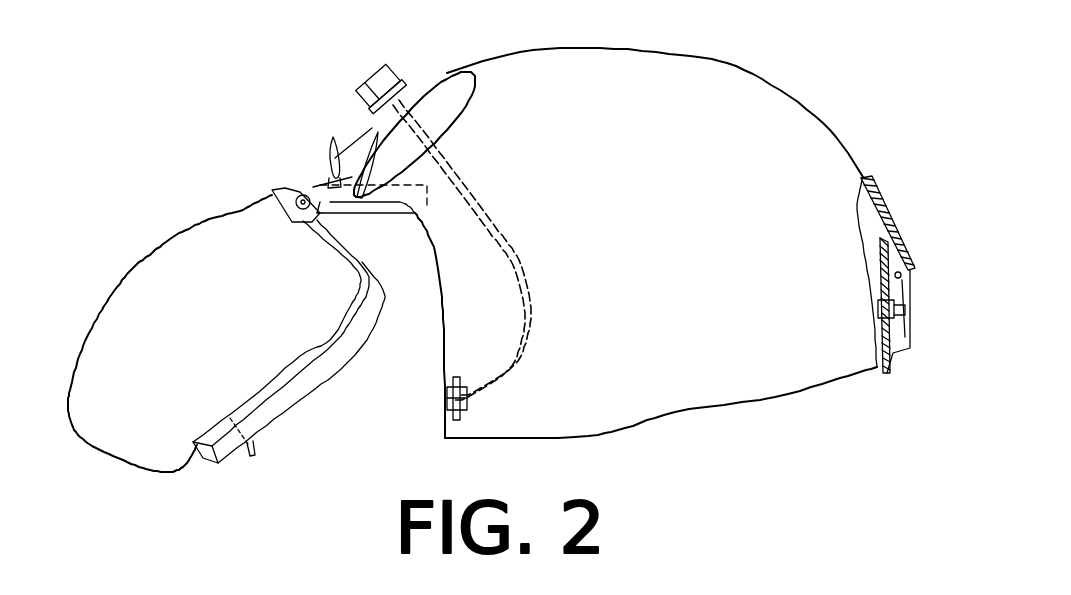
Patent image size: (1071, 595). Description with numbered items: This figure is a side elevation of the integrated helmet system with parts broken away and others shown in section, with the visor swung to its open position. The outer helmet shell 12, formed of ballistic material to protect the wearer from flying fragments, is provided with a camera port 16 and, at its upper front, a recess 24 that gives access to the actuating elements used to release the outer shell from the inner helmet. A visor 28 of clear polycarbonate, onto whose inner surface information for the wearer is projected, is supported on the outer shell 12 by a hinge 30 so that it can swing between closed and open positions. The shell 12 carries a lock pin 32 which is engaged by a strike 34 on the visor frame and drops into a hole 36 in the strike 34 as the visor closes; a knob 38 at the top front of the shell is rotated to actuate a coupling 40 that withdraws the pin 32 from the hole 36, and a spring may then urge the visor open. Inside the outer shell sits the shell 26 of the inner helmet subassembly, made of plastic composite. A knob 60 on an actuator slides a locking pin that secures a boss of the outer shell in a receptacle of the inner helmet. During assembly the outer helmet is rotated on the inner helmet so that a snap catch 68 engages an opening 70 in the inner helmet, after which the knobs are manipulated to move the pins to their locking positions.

The outer helmet shell 12 is at (718, 87).
The camera port 16 is at (443, 91).
The recess 24 is at (363, 130).
The shell of the inner helmet subassembly 26 is at (893, 373).
The visor 28 is at (203, 252).
The hinge 30 is at (281, 188).
The lock pin 32 is at (444, 427).
The strike 34 is at (254, 455).
The hole 36 is at (249, 437).
The knob 38 is at (377, 84).
The coupling 40 is at (507, 250).
The knob 60 is at (330, 158).
The snap catch 68 is at (890, 313).
The opening 70 is at (880, 307).